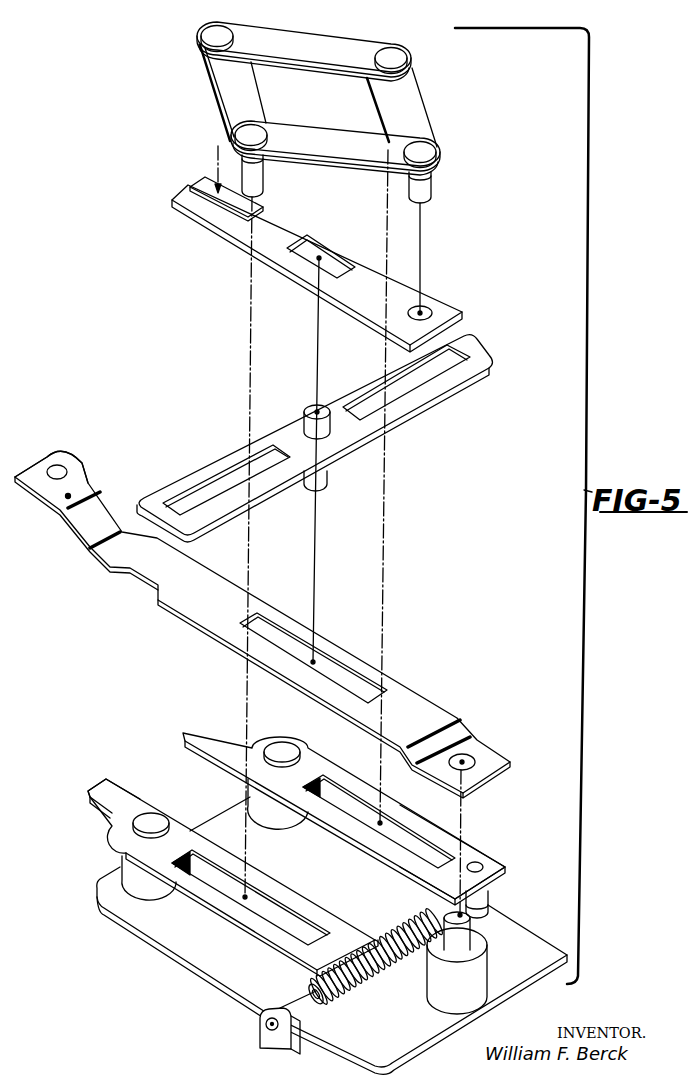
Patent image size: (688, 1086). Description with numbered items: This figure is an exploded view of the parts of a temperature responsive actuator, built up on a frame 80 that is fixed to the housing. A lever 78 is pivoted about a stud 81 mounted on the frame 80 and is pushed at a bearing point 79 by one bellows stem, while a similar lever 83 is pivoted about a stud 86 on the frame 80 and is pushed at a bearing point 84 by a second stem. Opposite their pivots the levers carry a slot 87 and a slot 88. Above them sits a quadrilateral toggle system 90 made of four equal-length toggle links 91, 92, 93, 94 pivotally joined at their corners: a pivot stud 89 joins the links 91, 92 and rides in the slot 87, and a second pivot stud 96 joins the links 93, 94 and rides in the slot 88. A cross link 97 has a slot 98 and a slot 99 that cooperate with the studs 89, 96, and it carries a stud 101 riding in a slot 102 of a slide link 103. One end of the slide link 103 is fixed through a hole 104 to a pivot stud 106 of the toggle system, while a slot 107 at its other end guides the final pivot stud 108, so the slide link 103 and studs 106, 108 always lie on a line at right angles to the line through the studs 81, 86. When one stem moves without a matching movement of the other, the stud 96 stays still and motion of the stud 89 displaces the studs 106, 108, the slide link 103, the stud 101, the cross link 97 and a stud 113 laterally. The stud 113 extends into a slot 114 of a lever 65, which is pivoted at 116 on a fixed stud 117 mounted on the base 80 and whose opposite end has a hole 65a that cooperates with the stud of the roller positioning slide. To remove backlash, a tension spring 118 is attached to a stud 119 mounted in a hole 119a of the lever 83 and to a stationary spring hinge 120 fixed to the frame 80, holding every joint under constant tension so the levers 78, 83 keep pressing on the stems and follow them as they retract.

The lever 65 is at (265, 614).
The hole 65a is at (60, 463).
The lever 78 is at (233, 868).
The bearing point 79 is at (113, 783).
The frame 80 is at (332, 936).
The stud 81 is at (151, 815).
The lever 83 is at (473, 852).
The bearing point 84 is at (364, 809).
The stud 86 is at (282, 743).
The slot 87 is at (300, 937).
The slot 88 is at (423, 840).
The pivot stud 89 is at (263, 180).
The toggle system 90 is at (298, 96).
The toggle link 91 is at (323, 122).
The toggle link 92 is at (258, 111).
The toggle link 93 is at (313, 62).
The toggle link 94 is at (383, 108).
The pivot stud 96 is at (392, 50).
The cross link 97 is at (325, 446).
The slot 98 is at (430, 375).
The slot 99 is at (202, 506).
The stud 101 is at (305, 418).
The slot 102 is at (337, 260).
The slide link 103 is at (325, 268).
The hole 104 is at (427, 313).
The pivot stud 106 is at (433, 197).
The slot 107 is at (190, 168).
The pivot stud 108 is at (200, 35).
The stud 113 is at (327, 477).
The slot 114 is at (337, 668).
The pivot 116 is at (472, 752).
The fixed stud 117 is at (467, 942).
The tension spring 118 is at (407, 970).
The stud 119 is at (483, 895).
The hole 119a is at (480, 865).
The spring hinge 120 is at (303, 1037).